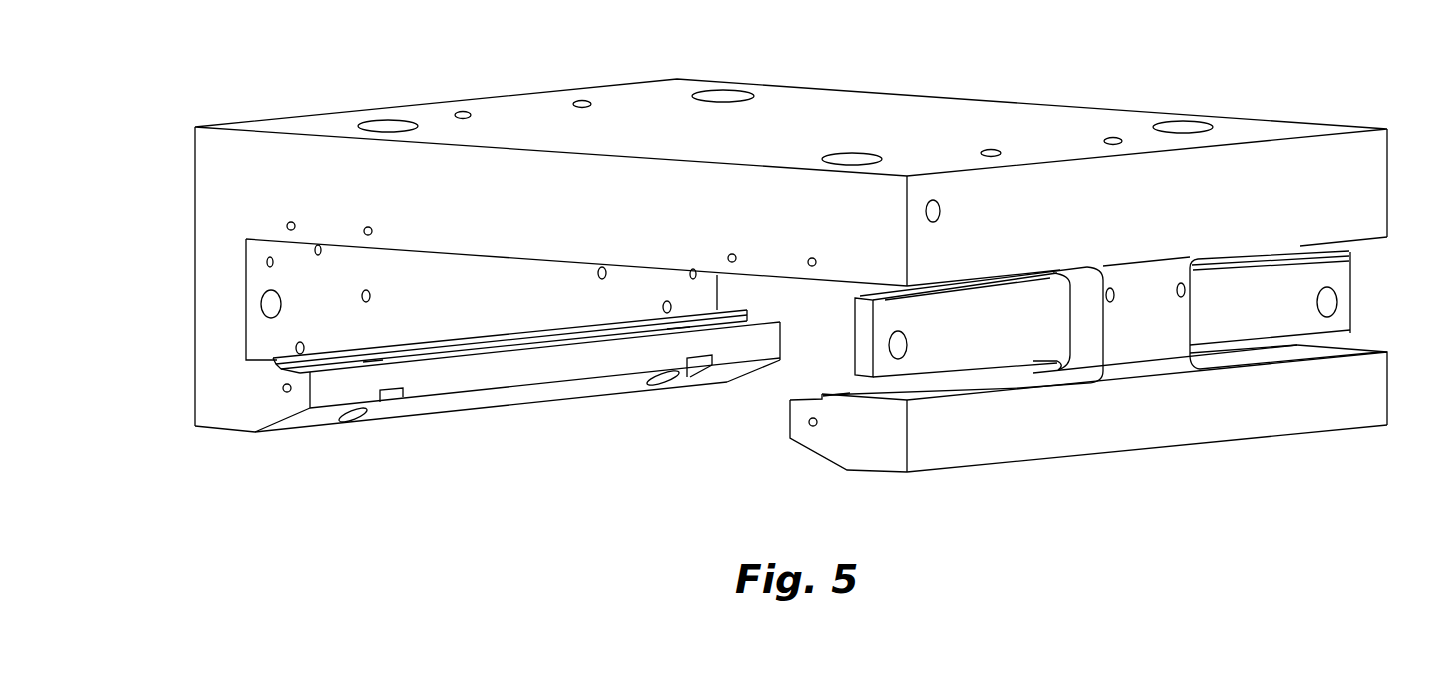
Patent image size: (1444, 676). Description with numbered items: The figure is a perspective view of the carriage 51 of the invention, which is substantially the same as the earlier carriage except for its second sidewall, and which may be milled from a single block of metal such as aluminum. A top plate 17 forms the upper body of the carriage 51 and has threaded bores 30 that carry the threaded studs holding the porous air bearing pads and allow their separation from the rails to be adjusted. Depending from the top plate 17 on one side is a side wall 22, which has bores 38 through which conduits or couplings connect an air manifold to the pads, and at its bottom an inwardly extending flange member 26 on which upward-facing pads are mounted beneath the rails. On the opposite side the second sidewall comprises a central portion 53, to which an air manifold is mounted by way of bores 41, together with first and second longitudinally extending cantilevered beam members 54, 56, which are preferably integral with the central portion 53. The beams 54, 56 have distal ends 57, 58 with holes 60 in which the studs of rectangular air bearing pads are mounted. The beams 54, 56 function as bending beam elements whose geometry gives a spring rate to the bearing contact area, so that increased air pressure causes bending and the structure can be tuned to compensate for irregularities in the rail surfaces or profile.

The carriage 51 is at (533, 58).
The top plate 17 is at (237, 160).
The threaded bores 30 is at (380, 124).
The side wall 22 is at (213, 267).
The bores 38 is at (277, 265).
The flange member 26 is at (232, 418).
The central portion 53 is at (1122, 390).
The second cantilevered beam member 56 is at (900, 306).
The distal end of second beam 58 is at (865, 333).
The holes 60 is at (907, 345).
The bores 41 is at (1178, 283).
The distal end of first beam 57 is at (1353, 267).
The first cantilevered beam member 54 is at (1345, 318).